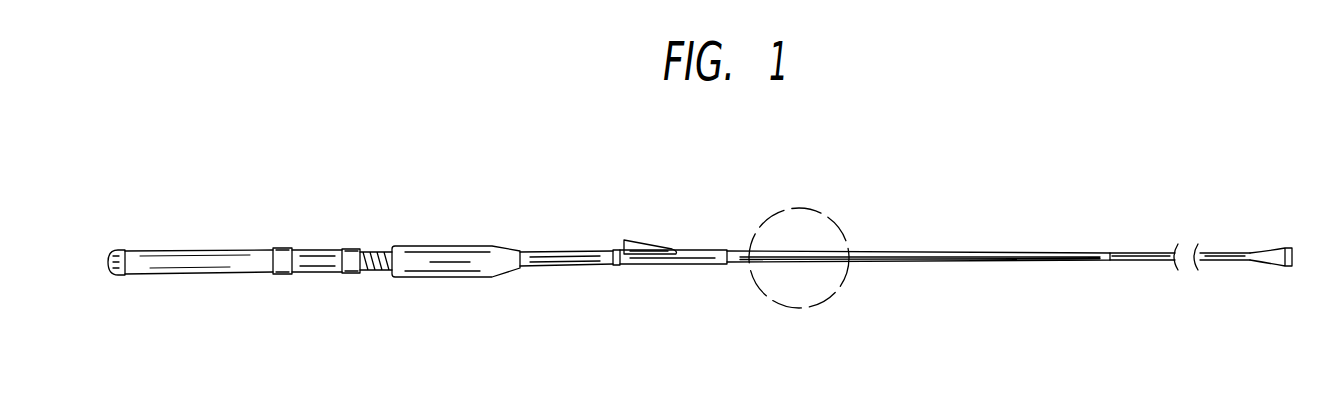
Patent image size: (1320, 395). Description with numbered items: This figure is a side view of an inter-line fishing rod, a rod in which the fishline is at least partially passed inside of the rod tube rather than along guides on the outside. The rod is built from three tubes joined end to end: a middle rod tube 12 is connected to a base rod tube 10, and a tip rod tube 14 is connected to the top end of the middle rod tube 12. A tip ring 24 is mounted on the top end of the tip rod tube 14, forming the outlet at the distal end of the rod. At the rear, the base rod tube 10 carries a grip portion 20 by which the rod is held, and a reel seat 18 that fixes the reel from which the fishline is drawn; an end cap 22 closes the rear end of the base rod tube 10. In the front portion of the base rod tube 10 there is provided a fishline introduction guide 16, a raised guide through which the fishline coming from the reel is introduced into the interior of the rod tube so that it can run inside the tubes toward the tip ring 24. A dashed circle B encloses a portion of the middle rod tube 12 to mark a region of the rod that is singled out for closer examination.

The base rod tube 10 is at (573, 268).
The middle rod tube 12 is at (940, 262).
The tip rod tube 14 is at (1140, 262).
The fishline introduction guide 16 is at (643, 240).
The reel seat 18 is at (288, 276).
The grip portion 20 is at (462, 262).
The proximal end cap 22 is at (120, 276).
The tip ring 24 is at (1282, 262).
The detail region B is at (824, 212).